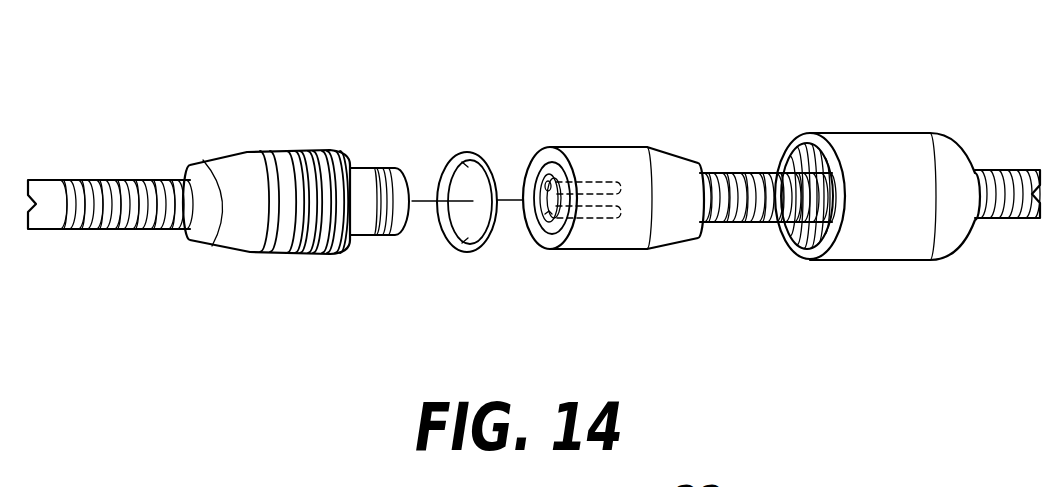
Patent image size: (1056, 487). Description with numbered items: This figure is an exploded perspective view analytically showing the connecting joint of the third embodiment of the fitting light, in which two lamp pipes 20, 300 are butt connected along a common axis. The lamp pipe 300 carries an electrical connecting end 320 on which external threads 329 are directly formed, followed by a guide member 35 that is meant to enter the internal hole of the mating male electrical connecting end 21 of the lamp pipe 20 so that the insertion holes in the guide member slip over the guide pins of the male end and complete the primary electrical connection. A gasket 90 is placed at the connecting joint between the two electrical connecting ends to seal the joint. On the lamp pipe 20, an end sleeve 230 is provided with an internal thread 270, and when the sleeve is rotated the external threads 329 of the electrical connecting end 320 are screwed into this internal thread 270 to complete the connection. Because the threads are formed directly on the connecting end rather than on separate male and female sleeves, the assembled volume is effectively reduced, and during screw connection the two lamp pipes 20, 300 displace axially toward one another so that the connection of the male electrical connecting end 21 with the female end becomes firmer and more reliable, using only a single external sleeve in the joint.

The lamp pipe 300 is at (120, 232).
The electrical connecting end 320 is at (240, 233).
The external threads 329 is at (308, 247).
The guide member 35 is at (377, 237).
The gasket 90 is at (477, 247).
The male electrical connecting end 21 is at (594, 160).
The internal thread 270 is at (800, 248).
The end sleeve 230 is at (860, 240).
The lamp pipe 20 is at (1016, 222).